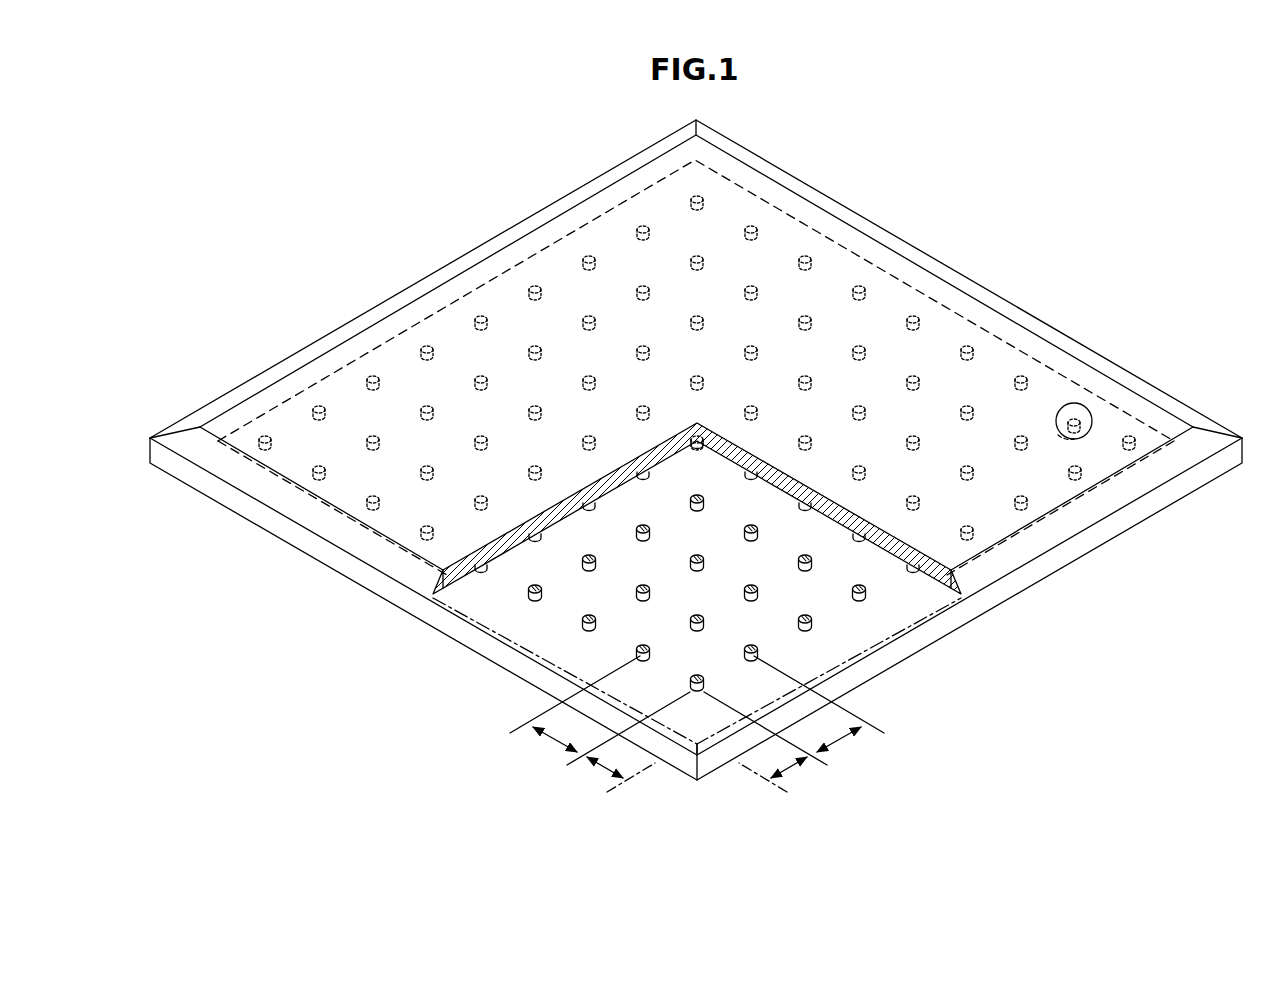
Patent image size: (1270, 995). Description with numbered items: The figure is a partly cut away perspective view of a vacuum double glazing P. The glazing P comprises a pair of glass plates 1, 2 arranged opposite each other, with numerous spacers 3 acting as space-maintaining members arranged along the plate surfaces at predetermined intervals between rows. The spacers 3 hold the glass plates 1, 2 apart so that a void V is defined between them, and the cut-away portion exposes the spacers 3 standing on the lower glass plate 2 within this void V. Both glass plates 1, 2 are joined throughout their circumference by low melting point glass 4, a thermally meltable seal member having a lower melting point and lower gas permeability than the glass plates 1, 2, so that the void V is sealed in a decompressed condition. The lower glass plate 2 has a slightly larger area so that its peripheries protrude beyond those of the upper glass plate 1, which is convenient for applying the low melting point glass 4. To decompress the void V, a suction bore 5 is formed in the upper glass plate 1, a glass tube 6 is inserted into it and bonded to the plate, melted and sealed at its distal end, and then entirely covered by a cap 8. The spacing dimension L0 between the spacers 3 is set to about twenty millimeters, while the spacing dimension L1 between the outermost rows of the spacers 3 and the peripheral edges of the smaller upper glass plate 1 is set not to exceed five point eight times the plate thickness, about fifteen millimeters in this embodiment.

The glass plate 1 is at (882, 305).
The glass plate 2 is at (930, 640).
The spacers 3 is at (806, 256).
The low melting point glass 4 is at (275, 498).
The suction bore 5 is at (1060, 440).
The glass tube 6 is at (1075, 410).
The cap 8 is at (1089, 414).
The vacuum double glazing P is at (430, 240).
The void V is at (507, 566).
The spacing dimension L0 is at (553, 740).
The spacing dimension L1 is at (597, 768).